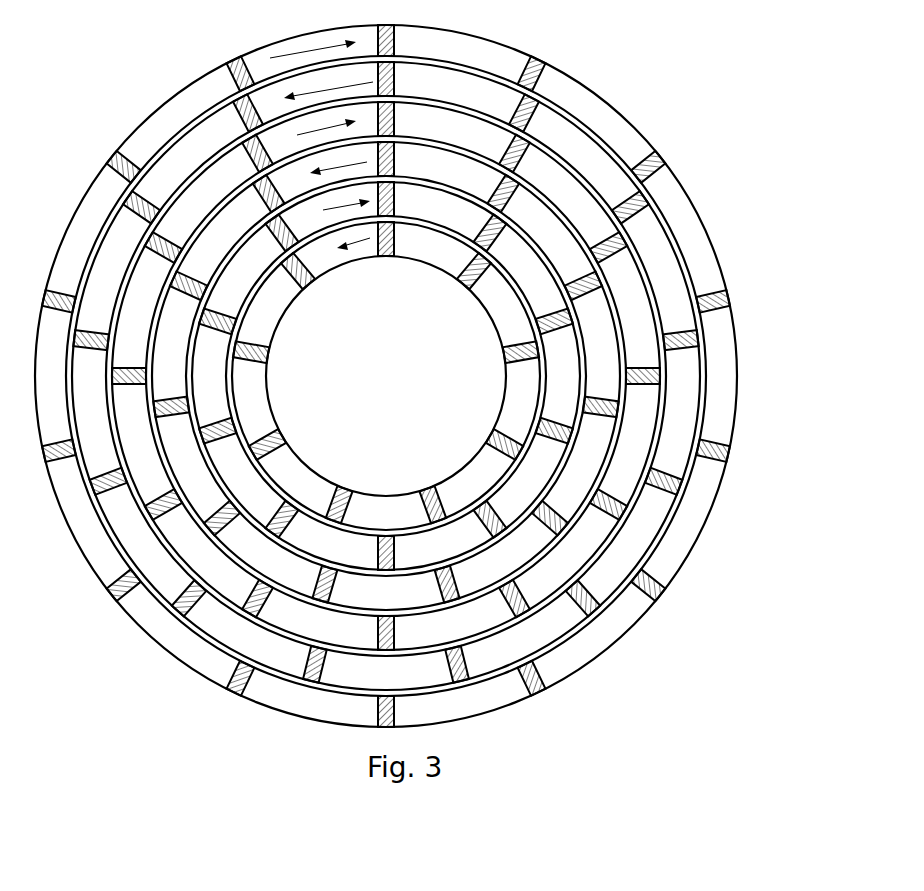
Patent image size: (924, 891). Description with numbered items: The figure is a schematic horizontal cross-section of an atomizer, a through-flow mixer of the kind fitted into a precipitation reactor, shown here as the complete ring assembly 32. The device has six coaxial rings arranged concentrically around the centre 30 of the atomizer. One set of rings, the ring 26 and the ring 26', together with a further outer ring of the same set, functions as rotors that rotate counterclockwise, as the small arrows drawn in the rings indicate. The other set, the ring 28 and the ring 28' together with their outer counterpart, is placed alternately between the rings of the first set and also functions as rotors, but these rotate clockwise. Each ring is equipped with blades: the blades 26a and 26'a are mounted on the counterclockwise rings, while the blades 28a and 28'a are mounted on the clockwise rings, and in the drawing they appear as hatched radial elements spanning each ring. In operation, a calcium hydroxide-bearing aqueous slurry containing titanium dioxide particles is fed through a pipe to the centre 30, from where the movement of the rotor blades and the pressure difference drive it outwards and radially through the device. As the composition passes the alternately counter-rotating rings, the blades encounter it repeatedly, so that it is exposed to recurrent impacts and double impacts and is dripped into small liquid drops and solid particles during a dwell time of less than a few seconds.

The coaxial ring 26 is at (386, 376).
The blades 26a is at (277, 437).
The coaxial ring 26' is at (386, 376).
The blades 26'a is at (249, 388).
The coaxial ring 28 is at (386, 376).
The blades 28a is at (548, 428).
The coaxial ring 28' is at (461, 376).
The blades 28'a is at (700, 521).
The centre of the atomizer 30 is at (389, 356).
The concentric ring assembly 32 is at (720, 213).